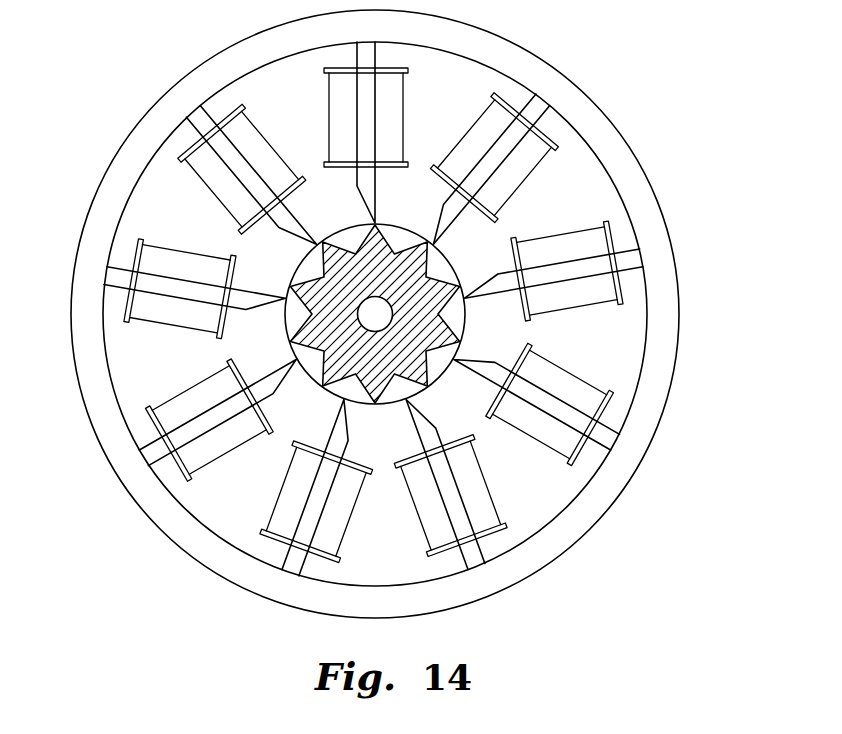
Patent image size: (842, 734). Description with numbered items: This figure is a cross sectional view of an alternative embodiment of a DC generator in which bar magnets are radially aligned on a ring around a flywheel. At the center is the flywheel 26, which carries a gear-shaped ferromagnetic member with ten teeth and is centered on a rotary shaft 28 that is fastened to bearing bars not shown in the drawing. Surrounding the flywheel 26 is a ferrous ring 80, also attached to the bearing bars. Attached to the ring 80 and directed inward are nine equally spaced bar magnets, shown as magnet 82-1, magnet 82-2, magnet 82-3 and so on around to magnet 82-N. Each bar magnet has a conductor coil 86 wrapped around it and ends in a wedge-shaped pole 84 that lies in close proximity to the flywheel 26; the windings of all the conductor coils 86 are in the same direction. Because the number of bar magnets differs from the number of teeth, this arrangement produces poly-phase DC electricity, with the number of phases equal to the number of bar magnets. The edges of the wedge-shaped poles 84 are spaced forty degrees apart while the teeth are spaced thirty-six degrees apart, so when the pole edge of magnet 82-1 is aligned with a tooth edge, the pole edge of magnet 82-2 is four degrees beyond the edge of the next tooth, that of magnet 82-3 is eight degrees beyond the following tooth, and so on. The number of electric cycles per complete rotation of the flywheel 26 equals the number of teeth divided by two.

The ferrous ring 80 is at (128, 157).
The flywheel 26 is at (462, 264).
The rotary shaft 28 is at (375, 315).
The bar magnet 82-1 is at (362, 133).
The bar magnet 82-2 is at (537, 103).
The bar magnet 82-3 is at (637, 261).
The bar magnet 82-N is at (184, 150).
The wedge-shaped pole 84 is at (268, 316).
The conductor coil 86 is at (232, 192).